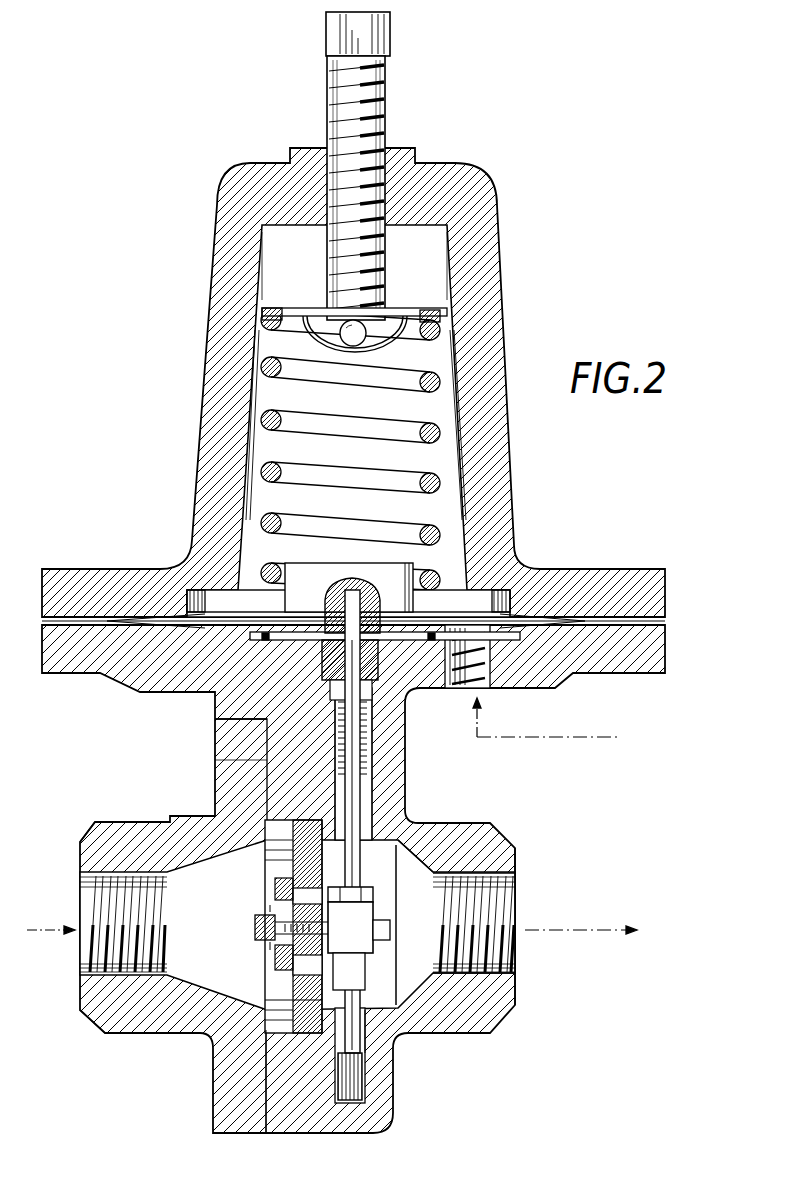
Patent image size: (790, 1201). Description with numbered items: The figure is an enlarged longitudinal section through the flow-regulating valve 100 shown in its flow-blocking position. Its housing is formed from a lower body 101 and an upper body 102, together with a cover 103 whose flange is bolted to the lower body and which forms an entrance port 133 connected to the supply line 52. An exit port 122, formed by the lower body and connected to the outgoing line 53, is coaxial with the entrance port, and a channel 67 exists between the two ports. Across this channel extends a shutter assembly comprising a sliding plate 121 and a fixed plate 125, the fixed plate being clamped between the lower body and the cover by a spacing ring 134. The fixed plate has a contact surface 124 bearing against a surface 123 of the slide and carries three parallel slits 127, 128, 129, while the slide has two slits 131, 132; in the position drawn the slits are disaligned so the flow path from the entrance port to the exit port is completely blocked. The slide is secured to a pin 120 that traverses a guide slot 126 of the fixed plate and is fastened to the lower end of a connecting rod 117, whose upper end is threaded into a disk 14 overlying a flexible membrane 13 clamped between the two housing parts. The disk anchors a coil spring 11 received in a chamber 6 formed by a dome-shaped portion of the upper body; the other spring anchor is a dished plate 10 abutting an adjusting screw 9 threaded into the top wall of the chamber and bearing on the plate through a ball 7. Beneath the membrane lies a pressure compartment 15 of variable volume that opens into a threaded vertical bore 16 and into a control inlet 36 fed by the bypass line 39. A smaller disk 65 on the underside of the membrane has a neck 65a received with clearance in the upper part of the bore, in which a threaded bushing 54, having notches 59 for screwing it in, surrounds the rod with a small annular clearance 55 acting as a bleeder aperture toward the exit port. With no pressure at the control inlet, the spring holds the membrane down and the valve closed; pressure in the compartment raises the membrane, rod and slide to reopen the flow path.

The flow-regulating valve 100 is at (193, 132).
The adjusting screw 9 is at (384, 80).
The chamber 6 is at (437, 270).
The dished plate 10 is at (282, 308).
The ball 7 is at (362, 331).
The coil spring 11 is at (262, 420).
The upper body 102 is at (500, 527).
The disk 14 is at (300, 572).
The flexible membrane 13 is at (560, 612).
The pressure compartment 15 is at (205, 642).
The smaller disk 65 is at (272, 640).
The neck 65a is at (340, 660).
The threaded vertical bore 16 is at (415, 690).
The control inlet 36 is at (488, 690).
The bypass line 39 is at (610, 737).
The annular clearance 55 is at (270, 755).
The notches 59 is at (410, 712).
The threaded bushing 54 is at (213, 784).
The lower body 101 is at (410, 788).
The connecting rod 117 is at (398, 813).
The entrance port 133 is at (81, 870).
The channel 67 is at (425, 868).
The fixed plate 125 is at (276, 866).
The supply line 52 is at (35, 925).
The sliding plate 121 is at (276, 883).
The exit port 122 is at (490, 890).
The slit 127 is at (383, 887).
The slit 131 is at (272, 912).
The guide slot 126 is at (384, 918).
The slit 132 is at (283, 948).
The outgoing line 53 is at (595, 935).
The surface 123 is at (292, 972).
The contact surface 124 is at (293, 1003).
The pin 120 is at (493, 1005).
The cover 103 is at (212, 1058).
The slit 128 is at (405, 1040).
The slit 129 is at (372, 1048).
The spacing ring 134 is at (280, 1090).